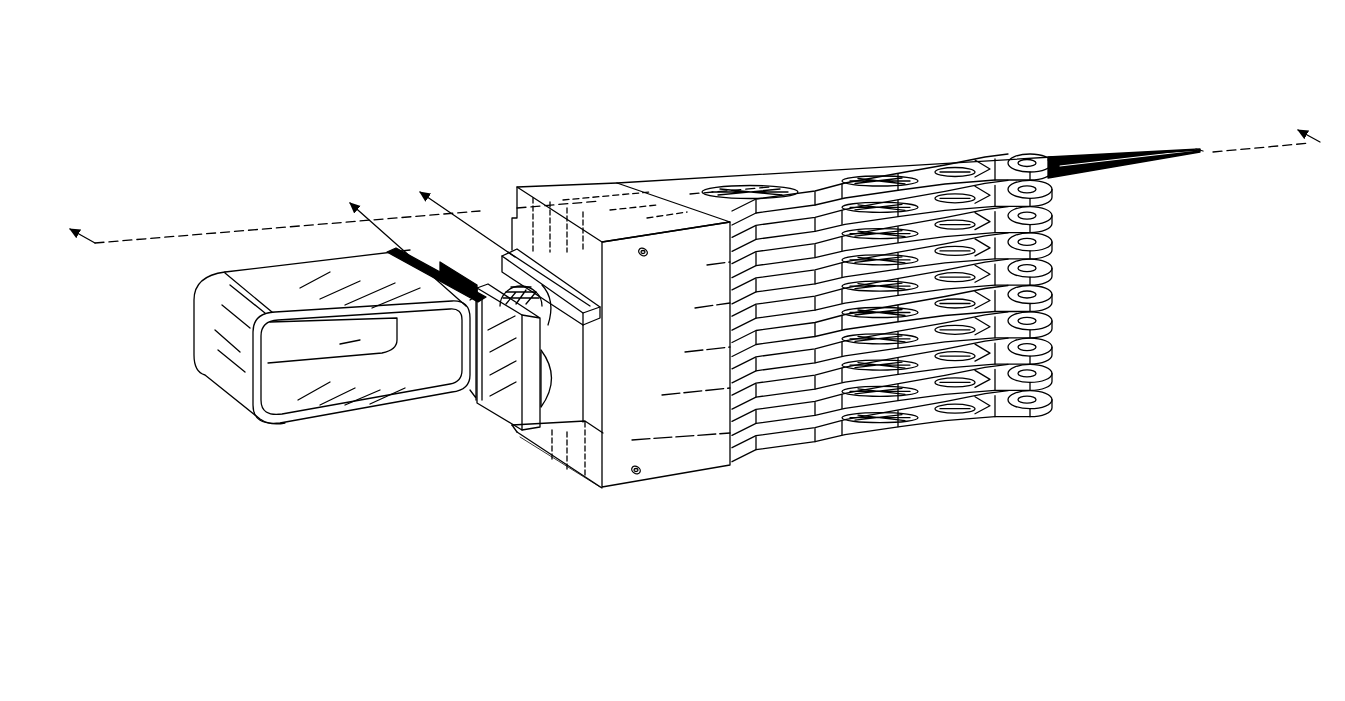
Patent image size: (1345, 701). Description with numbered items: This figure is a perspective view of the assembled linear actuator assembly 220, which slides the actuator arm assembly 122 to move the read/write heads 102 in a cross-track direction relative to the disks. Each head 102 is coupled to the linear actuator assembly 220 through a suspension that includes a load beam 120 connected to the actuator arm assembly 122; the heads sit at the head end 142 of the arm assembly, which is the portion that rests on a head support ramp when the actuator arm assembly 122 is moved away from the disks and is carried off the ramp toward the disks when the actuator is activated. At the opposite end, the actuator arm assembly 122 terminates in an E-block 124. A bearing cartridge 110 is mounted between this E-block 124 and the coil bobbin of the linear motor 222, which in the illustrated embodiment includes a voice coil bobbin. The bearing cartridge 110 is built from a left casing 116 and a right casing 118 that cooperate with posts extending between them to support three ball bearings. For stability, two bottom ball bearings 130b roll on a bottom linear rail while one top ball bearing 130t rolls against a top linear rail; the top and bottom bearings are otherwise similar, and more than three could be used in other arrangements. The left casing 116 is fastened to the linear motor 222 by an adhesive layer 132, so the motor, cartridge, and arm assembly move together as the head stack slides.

The linear actuator assembly 220 is at (683, 325).
The bearing cartridge 110 is at (462, 341).
The linear motor 222 is at (338, 337).
The adhesive layer 132 is at (432, 263).
The left casing 116 is at (452, 266).
The top ball bearing 130t is at (540, 300).
The bottom ball bearing 130b is at (548, 402).
The right casing 118 is at (598, 410).
The E-block 124 is at (600, 192).
The actuator arm assembly 122 is at (712, 151).
The load beam 120 is at (1120, 155).
The head 102 is at (1196, 150).
The head end 142 is at (1204, 158).